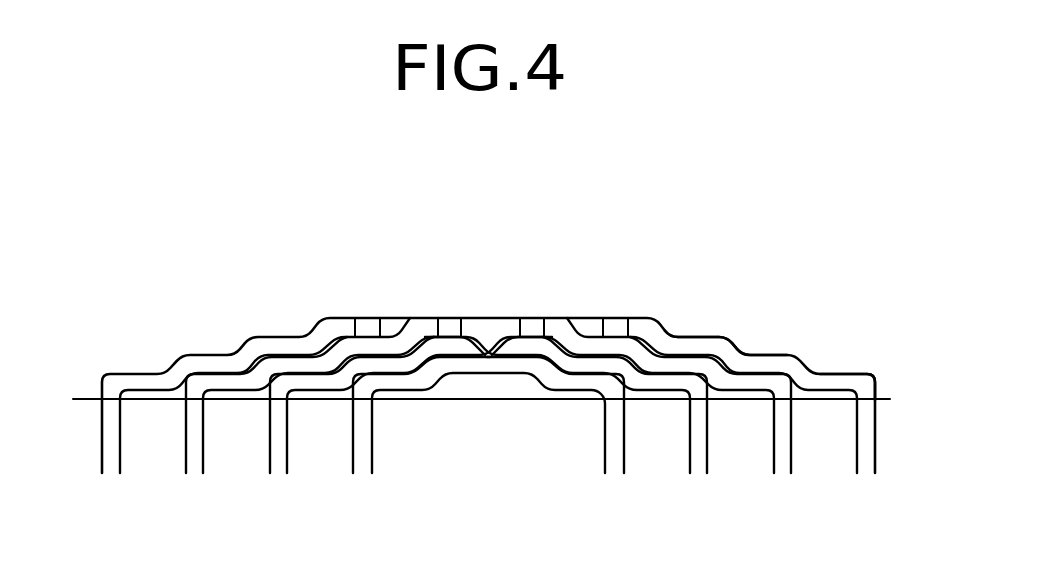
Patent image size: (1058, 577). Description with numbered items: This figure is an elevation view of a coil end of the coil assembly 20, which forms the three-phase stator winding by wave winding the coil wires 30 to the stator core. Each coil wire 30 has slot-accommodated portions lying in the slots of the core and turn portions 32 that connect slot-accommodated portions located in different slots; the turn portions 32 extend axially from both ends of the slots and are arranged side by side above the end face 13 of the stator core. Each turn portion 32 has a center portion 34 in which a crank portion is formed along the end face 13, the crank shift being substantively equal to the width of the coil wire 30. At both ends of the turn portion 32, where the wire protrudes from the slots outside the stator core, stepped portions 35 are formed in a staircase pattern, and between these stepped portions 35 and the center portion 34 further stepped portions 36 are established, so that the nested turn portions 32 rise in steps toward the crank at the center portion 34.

The end face 13 is at (93, 399).
The coil assembly 20 is at (515, 295).
The coil wire 30 is at (767, 300).
The turn portion 32 is at (513, 372).
The center portion 34 is at (618, 318).
The stepped portion 35 is at (848, 375).
The stepped portion 36 is at (767, 352).